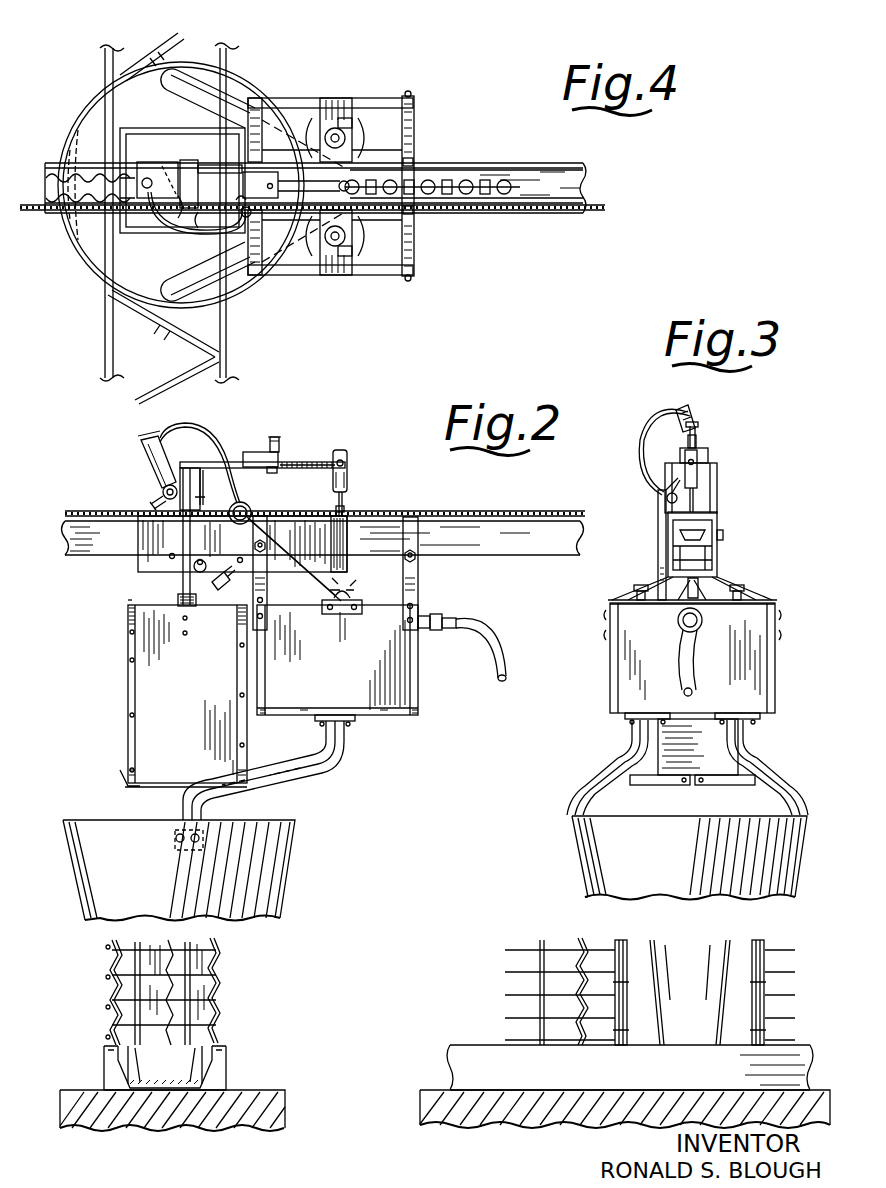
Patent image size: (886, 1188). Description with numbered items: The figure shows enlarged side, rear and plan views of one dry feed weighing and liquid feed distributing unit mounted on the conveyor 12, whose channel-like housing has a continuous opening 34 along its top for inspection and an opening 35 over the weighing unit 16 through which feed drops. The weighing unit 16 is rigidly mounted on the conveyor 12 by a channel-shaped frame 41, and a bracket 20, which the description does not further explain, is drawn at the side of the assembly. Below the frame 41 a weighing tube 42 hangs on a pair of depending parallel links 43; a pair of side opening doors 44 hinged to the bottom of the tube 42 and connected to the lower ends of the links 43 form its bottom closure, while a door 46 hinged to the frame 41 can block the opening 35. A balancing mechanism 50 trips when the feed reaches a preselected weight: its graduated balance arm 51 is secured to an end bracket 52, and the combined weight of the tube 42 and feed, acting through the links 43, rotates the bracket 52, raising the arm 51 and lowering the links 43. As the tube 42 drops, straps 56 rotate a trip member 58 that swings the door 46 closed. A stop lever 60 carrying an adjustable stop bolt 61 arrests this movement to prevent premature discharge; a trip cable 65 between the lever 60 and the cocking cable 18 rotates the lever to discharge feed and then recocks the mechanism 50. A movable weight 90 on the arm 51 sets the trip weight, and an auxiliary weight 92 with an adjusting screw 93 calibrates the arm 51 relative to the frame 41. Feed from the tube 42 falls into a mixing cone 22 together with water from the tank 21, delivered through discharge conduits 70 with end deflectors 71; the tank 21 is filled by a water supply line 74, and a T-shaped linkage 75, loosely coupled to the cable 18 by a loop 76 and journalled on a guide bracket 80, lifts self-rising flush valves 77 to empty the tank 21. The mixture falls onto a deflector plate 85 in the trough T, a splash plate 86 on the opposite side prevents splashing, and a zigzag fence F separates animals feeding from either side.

In FIG. 4, the conveyor 12 is at (568, 162).
In FIG. 2, the conveyor 12 is at (542, 548).
In FIG. 4, the weighing unit 16 is at (158, 126).
In FIG. 2, the weighing unit 16 is at (126, 596).
In FIG. 4, the cocking cable 18 is at (612, 210).
In FIG. 2, the cocking cable 18 is at (512, 512).
In FIG. 4, the frame bracket 20 is at (362, 96).
In FIG. 2, the frame bracket 20 is at (424, 612).
In FIG. 3, the frame bracket 20 is at (782, 604).
In FIG. 2, the water tank 21 is at (414, 678).
In FIG. 3, the water tank 21 is at (776, 684).
In FIG. 4, the mixing cone 22 is at (238, 70).
In FIG. 2, the mixing cone 22 is at (262, 914).
In FIG. 3, the mixing cone 22 is at (690, 940).
In FIG. 4, the continuous opening 34 is at (522, 166).
In FIG. 4, the opening 35 is at (150, 170).
In FIG. 2, the channel-shaped frame 41 is at (348, 530).
In FIG. 2, the weighing tube 42 is at (142, 710).
In FIG. 3, the weighing tube 42 is at (656, 744).
In FIG. 2, the depending parallel links 43 is at (182, 540).
In FIG. 2, the side opening doors 44 is at (126, 786).
In FIG. 3, the side opening doors 44 is at (716, 786).
In FIG. 2, the door 46 is at (214, 602).
In FIG. 3, the door 46 is at (686, 594).
In FIG. 2, the balancing mechanism 50 is at (218, 452).
In FIG. 3, the balancing mechanism 50 is at (718, 460).
In FIG. 4, the graduated balance arm 51 is at (290, 184).
In FIG. 2, the graduated balance arm 51 is at (292, 462).
In FIG. 3, the graduated balance arm 51 is at (698, 440).
In FIG. 4, the end bracket 52 is at (194, 172).
In FIG. 2, the end bracket 52 is at (200, 497).
In FIG. 4, the straps 56 is at (176, 162).
In FIG. 2, the straps 56 is at (180, 594).
In FIG. 3, the straps 56 is at (712, 602).
In FIG. 2, the trip member 58 is at (216, 553).
In FIG. 3, the trip member 58 is at (692, 596).
In FIG. 4, the stop lever 60 is at (120, 194).
In FIG. 2, the stop lever 60 is at (140, 464).
In FIG. 3, the stop lever 60 is at (676, 420).
In FIG. 2, the adjustable stop bolt 61 is at (150, 500).
In FIG. 4, the trip cable 65 is at (154, 226).
In FIG. 2, the trip cable 65 is at (192, 428).
In FIG. 3, the trip cable 65 is at (640, 424).
In FIG. 4, the discharge conduit 70 is at (252, 100).
In FIG. 2, the discharge conduit 70 is at (334, 780).
In FIG. 3, the discharge conduit 70 is at (598, 786).
In FIG. 2, the end deflector 71 is at (186, 866).
In FIG. 2, the water supply line 74 is at (505, 662).
In FIG. 3, the water supply line 74 is at (694, 680).
In FIG. 4, the linkage 75 is at (308, 226).
In FIG. 2, the linkage 75 is at (292, 562).
In FIG. 3, the linkage 75 is at (658, 548).
In FIG. 2, the loop 76 is at (258, 512).
In FIG. 3, the loop 76 is at (666, 504).
In FIG. 4, the flush valves 77 is at (432, 187).
In FIG. 4, the guide bracket 80 is at (332, 100).
In FIG. 2, the deflector plate 85 is at (190, 1090).
In FIG. 2, the splash plate 86 is at (120, 1064).
In FIG. 3, the splash plate 86 is at (638, 938).
In FIG. 4, the movable weight 90 is at (264, 172).
In FIG. 2, the movable weight 90 is at (258, 452).
In FIG. 3, the movable weight 90 is at (708, 452).
In FIG. 2, the auxiliary weight 92 is at (348, 470).
In FIG. 3, the auxiliary weight 92 is at (700, 482).
In FIG. 2, the adjusting screw 93 is at (345, 504).
In FIG. 3, the adjusting screw 93 is at (705, 506).
In FIG. 4, the zigzag fence F is at (118, 326).
In FIG. 2, the zigzag fence F is at (108, 972).
In FIG. 3, the zigzag fence F is at (574, 936).
In FIG. 4, the trough T is at (230, 364).
In FIG. 2, the trough T is at (216, 1074).
In FIG. 3, the trough T is at (480, 1040).